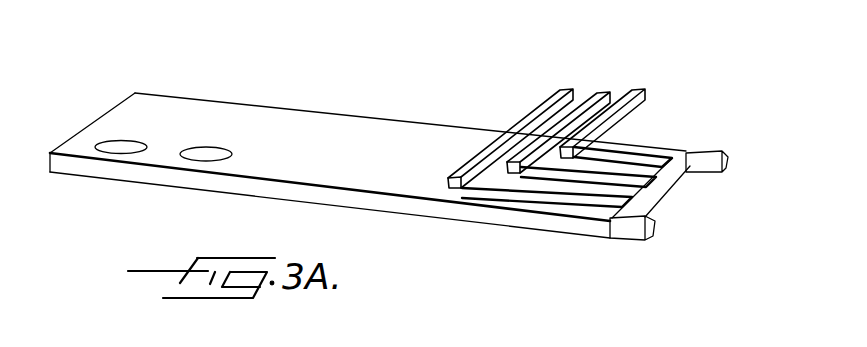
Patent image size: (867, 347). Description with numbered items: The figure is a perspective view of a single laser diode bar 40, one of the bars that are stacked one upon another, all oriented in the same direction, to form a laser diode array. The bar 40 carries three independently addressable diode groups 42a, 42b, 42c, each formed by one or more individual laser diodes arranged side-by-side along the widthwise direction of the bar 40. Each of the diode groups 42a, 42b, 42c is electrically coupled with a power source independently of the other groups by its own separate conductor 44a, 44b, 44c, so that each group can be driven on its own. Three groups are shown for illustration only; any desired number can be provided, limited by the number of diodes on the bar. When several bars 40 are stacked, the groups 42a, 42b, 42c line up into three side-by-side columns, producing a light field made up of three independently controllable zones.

The laser diode bar 40 is at (200, 113).
The diode group 42a is at (650, 155).
The diode group 42b is at (637, 175).
The diode group 42c is at (578, 198).
The conductor 44a is at (642, 88).
The conductor 44b is at (593, 92).
The conductor 44c is at (530, 120).